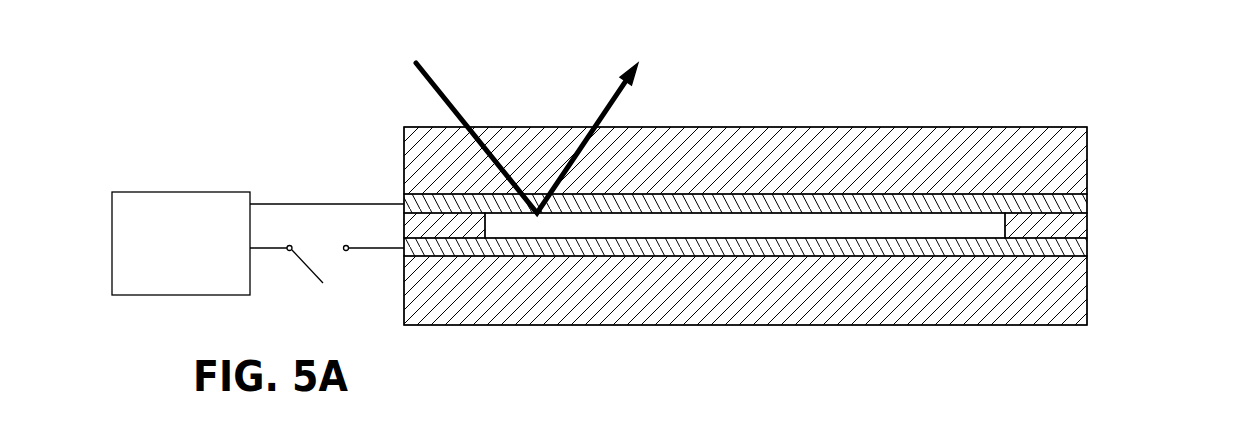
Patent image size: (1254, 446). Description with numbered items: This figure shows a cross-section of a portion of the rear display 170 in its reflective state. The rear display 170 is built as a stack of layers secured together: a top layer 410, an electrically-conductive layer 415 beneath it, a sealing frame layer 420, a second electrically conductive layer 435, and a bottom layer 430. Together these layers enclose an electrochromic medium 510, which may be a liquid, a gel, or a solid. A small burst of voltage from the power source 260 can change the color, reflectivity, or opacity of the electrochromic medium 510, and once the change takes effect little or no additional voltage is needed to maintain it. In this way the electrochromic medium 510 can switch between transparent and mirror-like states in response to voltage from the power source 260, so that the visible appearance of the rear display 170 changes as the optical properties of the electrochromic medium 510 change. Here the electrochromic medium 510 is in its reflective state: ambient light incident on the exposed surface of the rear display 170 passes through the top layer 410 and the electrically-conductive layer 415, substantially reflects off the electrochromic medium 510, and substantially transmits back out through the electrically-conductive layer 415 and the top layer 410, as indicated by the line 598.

The rear display 170 is at (956, 102).
The top layer 410 is at (1087, 150).
The electrically-conductive layer 415 is at (1087, 205).
The sealing frame layer 420 is at (1087, 220).
The electrochromic medium 510 is at (766, 234).
The electrically conductive layer 435 is at (1087, 250).
The bottom layer 430 is at (1087, 292).
The line 598 is at (437, 79).
The power source 260 is at (258, 243).